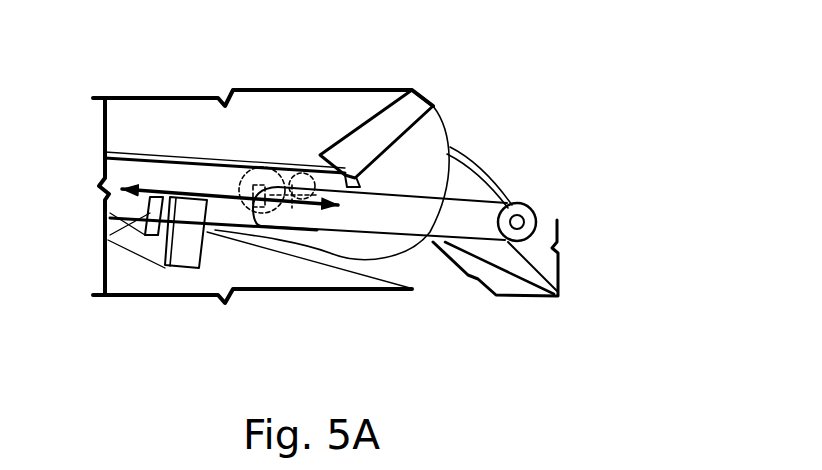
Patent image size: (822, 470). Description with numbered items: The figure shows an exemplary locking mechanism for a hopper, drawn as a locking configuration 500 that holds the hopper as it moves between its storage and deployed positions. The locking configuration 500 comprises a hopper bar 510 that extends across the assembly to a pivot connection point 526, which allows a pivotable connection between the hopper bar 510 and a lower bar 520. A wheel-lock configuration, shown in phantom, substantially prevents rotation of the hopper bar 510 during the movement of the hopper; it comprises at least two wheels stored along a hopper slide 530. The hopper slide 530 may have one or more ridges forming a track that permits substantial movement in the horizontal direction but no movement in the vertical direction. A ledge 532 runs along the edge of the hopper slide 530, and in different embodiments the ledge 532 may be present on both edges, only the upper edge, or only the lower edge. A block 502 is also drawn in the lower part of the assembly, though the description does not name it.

The locking configuration 500 is at (614, 207).
The actuator block 502 is at (188, 241).
The hopper bar 510 is at (409, 206).
The lower bar 520 is at (539, 248).
The pivot connection point 526 is at (502, 206).
The hopper slide 530 is at (156, 200).
The ledge 532 is at (219, 211).